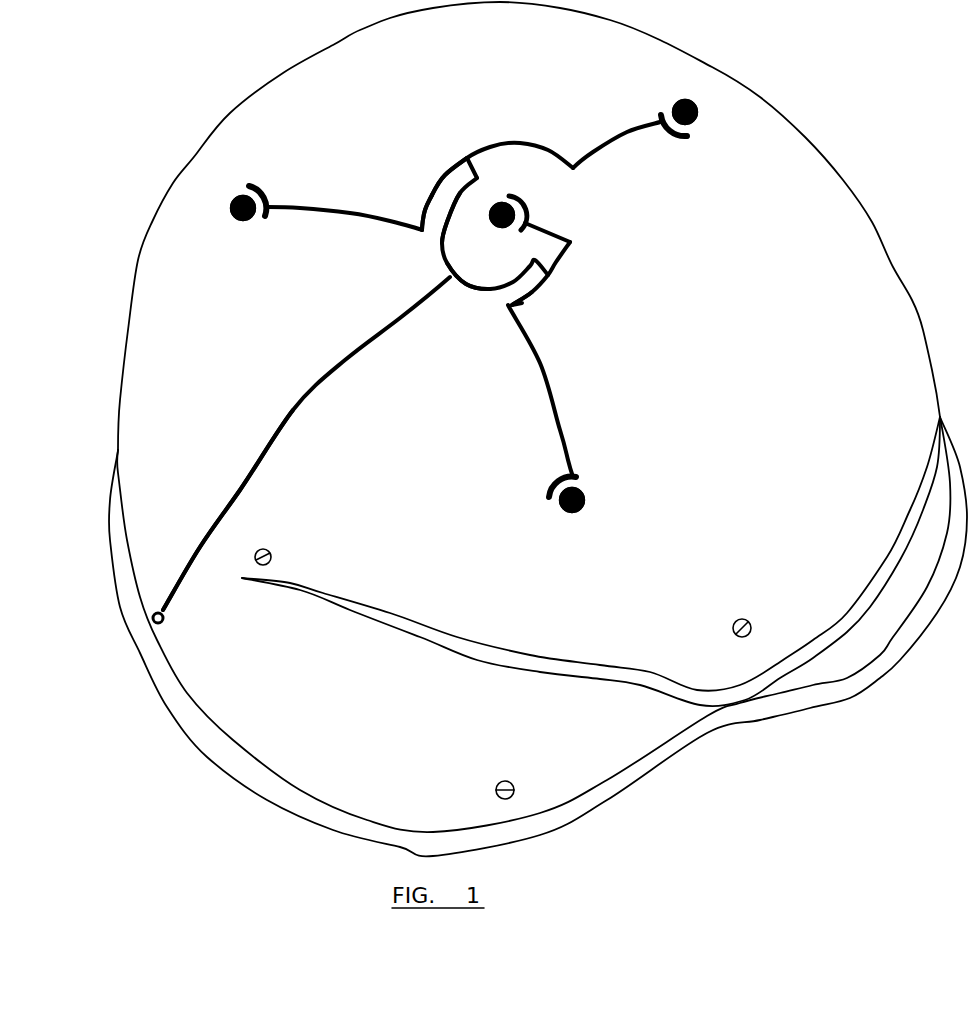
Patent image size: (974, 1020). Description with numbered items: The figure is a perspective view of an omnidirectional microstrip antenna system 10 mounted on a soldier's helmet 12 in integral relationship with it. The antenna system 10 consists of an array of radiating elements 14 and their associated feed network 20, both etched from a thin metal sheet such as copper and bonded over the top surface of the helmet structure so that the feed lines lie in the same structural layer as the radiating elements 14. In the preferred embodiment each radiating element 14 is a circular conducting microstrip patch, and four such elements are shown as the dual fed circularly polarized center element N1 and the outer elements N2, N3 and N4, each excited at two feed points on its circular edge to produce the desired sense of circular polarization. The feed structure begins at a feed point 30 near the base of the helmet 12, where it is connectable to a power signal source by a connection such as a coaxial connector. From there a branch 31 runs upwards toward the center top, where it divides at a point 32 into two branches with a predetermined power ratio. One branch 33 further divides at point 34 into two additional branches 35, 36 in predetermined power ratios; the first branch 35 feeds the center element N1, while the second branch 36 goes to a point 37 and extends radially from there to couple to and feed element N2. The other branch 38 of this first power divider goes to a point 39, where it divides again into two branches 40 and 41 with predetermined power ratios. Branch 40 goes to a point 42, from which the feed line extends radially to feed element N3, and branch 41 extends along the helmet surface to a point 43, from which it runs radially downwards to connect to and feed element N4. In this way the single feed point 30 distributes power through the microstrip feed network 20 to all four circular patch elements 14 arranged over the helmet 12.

The omnidirectional microstrip antenna system 10 is at (742, 232).
The soldier's helmet 12 is at (166, 185).
The radiating element 14 is at (240, 200).
The feed network 20 is at (293, 409).
The feed point 30 is at (153, 621).
The branch 31 is at (245, 487).
The dividing point 32 is at (445, 276).
The branch 33 is at (470, 288).
The dividing point 34 is at (549, 276).
The first branch 35 is at (574, 247).
The second branch 36 is at (523, 302).
The point 37 is at (506, 310).
The branch 38 is at (440, 245).
The dividing point 39 is at (468, 156).
The branch 40 is at (530, 143).
The branch 41 is at (440, 190).
The point 42 is at (574, 170).
The point 43 is at (418, 228).
The center element N1 is at (500, 228).
The circularly polarized element N2 is at (580, 514).
The circularly polarized element N3 is at (703, 124).
The circularly polarized element N4 is at (236, 221).